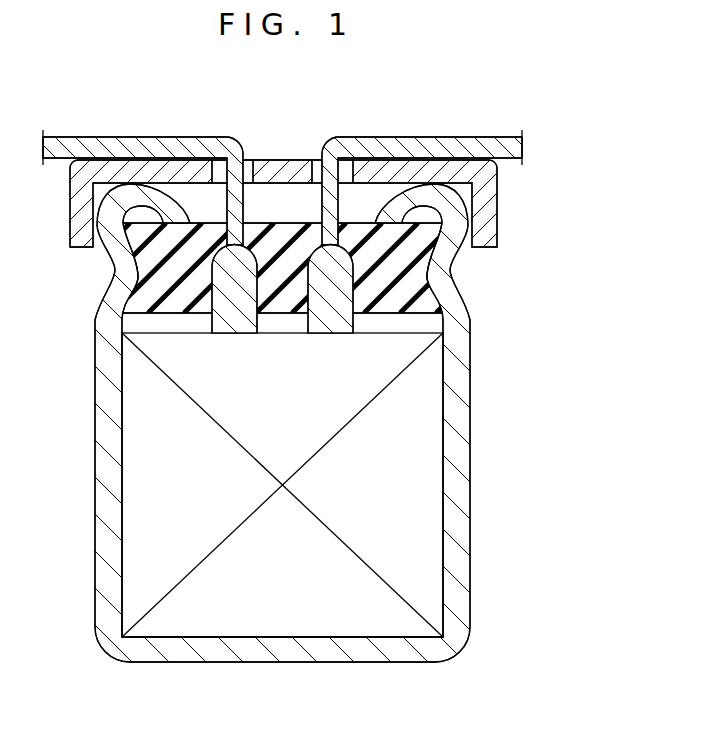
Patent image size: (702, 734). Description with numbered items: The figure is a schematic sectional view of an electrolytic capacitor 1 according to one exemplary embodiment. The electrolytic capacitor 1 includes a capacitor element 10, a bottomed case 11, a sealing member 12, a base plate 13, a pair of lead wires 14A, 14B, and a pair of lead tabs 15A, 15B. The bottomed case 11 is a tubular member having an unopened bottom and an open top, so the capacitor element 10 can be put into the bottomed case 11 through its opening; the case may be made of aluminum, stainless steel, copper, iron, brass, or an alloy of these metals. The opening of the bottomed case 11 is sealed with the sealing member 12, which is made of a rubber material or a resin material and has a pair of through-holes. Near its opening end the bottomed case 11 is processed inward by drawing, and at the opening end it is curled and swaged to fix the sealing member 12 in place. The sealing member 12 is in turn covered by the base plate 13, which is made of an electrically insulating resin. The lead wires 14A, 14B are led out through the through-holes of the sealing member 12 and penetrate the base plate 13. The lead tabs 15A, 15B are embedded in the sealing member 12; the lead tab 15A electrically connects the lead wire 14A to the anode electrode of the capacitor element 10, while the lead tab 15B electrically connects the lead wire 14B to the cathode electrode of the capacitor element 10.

The electrolytic capacitor 1 is at (502, 100).
The capacitor element 10 is at (423, 488).
The bottomed case 11 is at (460, 620).
The sealing member 12 is at (413, 271).
The base plate 13 is at (487, 208).
The lead wire 14A is at (149, 147).
The lead wire 14B is at (427, 147).
The lead tab 15A is at (236, 320).
The lead tab 15B is at (323, 320).